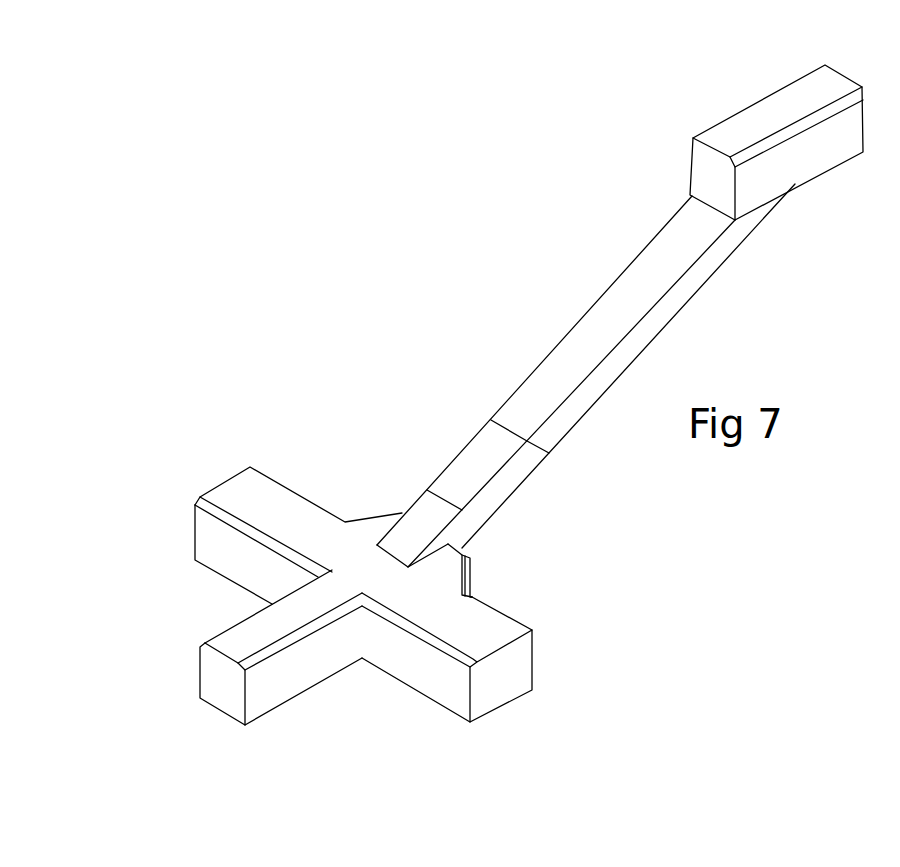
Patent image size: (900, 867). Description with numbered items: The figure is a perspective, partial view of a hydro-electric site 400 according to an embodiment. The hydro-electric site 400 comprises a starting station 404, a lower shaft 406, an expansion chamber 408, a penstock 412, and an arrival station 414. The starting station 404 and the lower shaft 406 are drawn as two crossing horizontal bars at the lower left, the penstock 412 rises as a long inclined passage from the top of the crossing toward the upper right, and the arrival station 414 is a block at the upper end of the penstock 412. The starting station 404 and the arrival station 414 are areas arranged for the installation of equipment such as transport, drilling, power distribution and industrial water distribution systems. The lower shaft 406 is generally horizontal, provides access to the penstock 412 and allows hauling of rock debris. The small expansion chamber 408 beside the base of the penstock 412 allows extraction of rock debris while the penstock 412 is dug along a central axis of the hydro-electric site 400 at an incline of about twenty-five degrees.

The hydro-electric site 400 is at (108, 201).
The starting station 404 is at (217, 630).
The lower shaft 406 is at (424, 697).
The expansion chamber 408 is at (472, 577).
The penstock 412 is at (538, 370).
The arrival station 414 is at (733, 115).